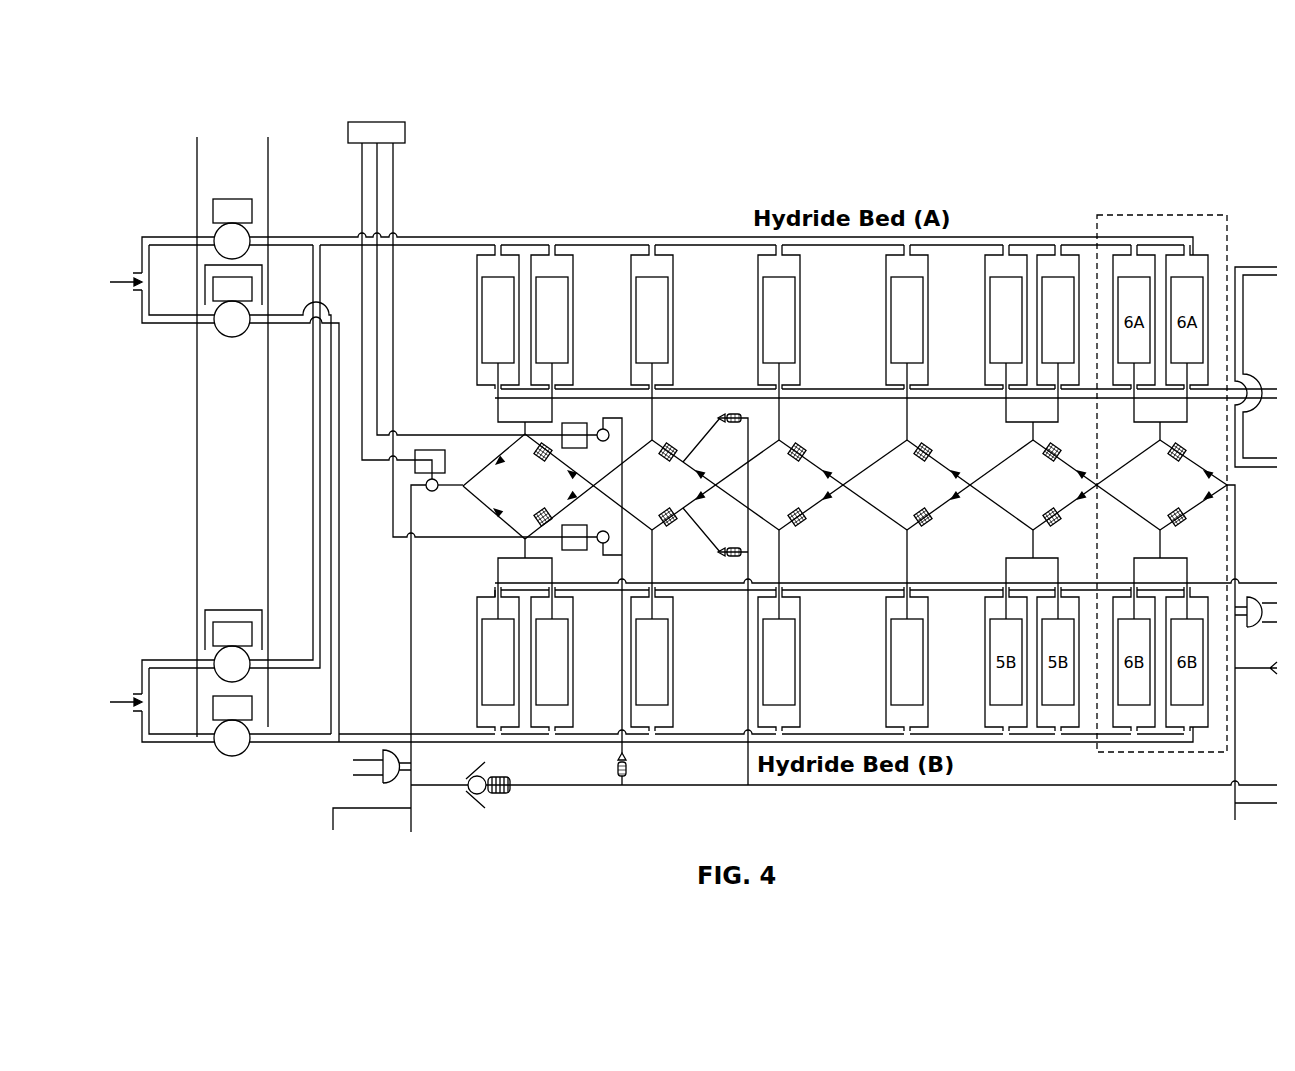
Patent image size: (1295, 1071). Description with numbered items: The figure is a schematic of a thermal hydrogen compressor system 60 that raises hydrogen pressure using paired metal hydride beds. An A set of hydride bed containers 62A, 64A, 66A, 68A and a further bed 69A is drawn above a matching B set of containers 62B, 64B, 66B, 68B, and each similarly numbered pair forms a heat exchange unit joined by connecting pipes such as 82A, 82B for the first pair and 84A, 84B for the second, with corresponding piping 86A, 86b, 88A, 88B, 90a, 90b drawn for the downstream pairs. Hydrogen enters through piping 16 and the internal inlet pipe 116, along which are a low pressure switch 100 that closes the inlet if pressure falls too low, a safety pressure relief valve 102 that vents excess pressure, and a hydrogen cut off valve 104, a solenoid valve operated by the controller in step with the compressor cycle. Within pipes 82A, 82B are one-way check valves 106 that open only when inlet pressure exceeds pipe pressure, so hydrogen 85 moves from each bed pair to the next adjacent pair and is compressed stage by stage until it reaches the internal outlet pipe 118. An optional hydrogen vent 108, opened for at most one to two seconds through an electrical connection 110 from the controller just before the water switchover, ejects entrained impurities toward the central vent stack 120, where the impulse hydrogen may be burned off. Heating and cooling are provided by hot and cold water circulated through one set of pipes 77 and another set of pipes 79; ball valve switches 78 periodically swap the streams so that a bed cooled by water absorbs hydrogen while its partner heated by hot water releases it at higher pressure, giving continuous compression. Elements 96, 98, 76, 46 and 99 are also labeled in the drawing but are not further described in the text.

The hydrogen compressor system 60 is at (188, 88).
The heat transfer fluid header 76 is at (405, 134).
The heat transfer fluid lines 46 is at (362, 168).
The set of pipes 77 is at (331, 238).
The set of pipes 79 is at (327, 315).
The hot water inlet 96 is at (138, 278).
The cold water inlet 98 is at (140, 698).
The ball valve switches 78 is at (213, 253).
The electrical connection 110 is at (233, 459).
The hydride bed container 62A is at (487, 288).
The hydride bed container 64A is at (657, 296).
The hydride bed container 66A is at (785, 297).
The hydride bed container 68A is at (905, 297).
The hydride cells 5A 69A is at (1005, 250).
The hydrogen 85 is at (500, 405).
The hydride bed container 62B is at (492, 634).
The hydride bed container 64B is at (662, 682).
The hydride bed container 66B is at (785, 628).
The hydride bed container 68B is at (900, 677).
The connecting pipe 82A is at (430, 449).
The connecting pipe 82B is at (473, 497).
The hydrogen cut off valve 104 is at (424, 488).
The internal inlet pipe 116 is at (410, 646).
The one-way check valve 106 is at (492, 462).
The hydrogen vent 108 is at (597, 421).
The pipe 84A is at (645, 442).
The pipe 84B is at (643, 525).
The check valves 99 is at (730, 414).
The hydrogen valve 86A is at (768, 448).
The hydrogen valve 86b is at (772, 528).
The hydrogen valve 88A is at (889, 449).
The hydrogen valve 88B is at (875, 512).
The hydrogen valve 90a is at (1017, 448).
The hydrogen valve 90b is at (1003, 512).
The internal outlet pipe 118 is at (1235, 700).
The low pressure switch 100 is at (390, 750).
The safety pressure relief valve 102 is at (471, 771).
The central vent stack 120 is at (963, 787).
The piping 16 is at (413, 819).